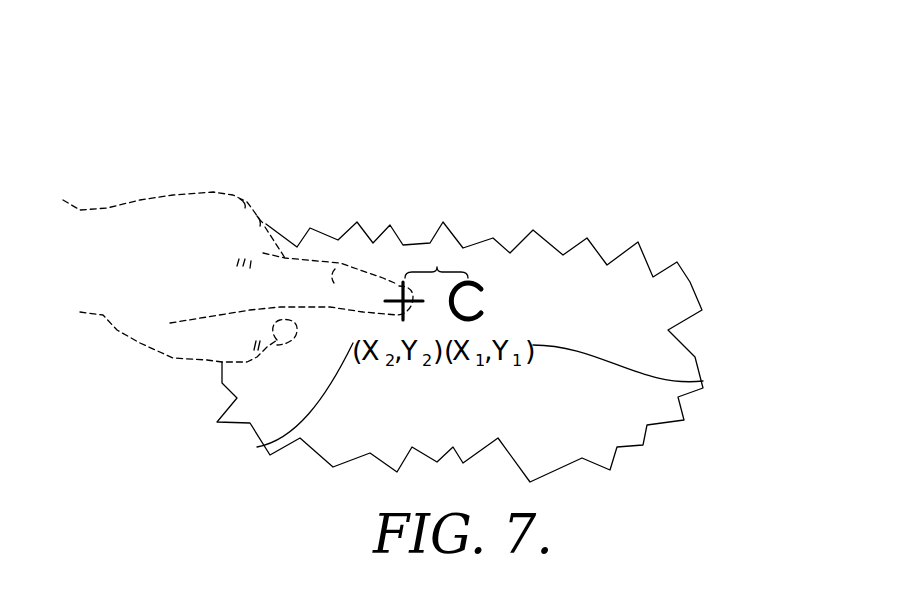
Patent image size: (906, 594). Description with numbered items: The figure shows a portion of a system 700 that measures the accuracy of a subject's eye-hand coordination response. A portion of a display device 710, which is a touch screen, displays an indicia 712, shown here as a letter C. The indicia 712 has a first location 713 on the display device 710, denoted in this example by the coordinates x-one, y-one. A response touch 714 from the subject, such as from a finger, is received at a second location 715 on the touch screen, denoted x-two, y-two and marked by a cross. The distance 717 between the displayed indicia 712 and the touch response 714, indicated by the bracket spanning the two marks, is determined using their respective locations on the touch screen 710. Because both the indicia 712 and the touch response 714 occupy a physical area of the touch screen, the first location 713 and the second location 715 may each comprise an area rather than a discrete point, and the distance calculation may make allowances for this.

The system 700 is at (247, 181).
The display device 710 is at (690, 282).
The indicia 712 is at (478, 283).
The first location 713 is at (703, 381).
The response touch 714 is at (401, 284).
The second location 715 is at (257, 447).
The distance 717 is at (437, 266).